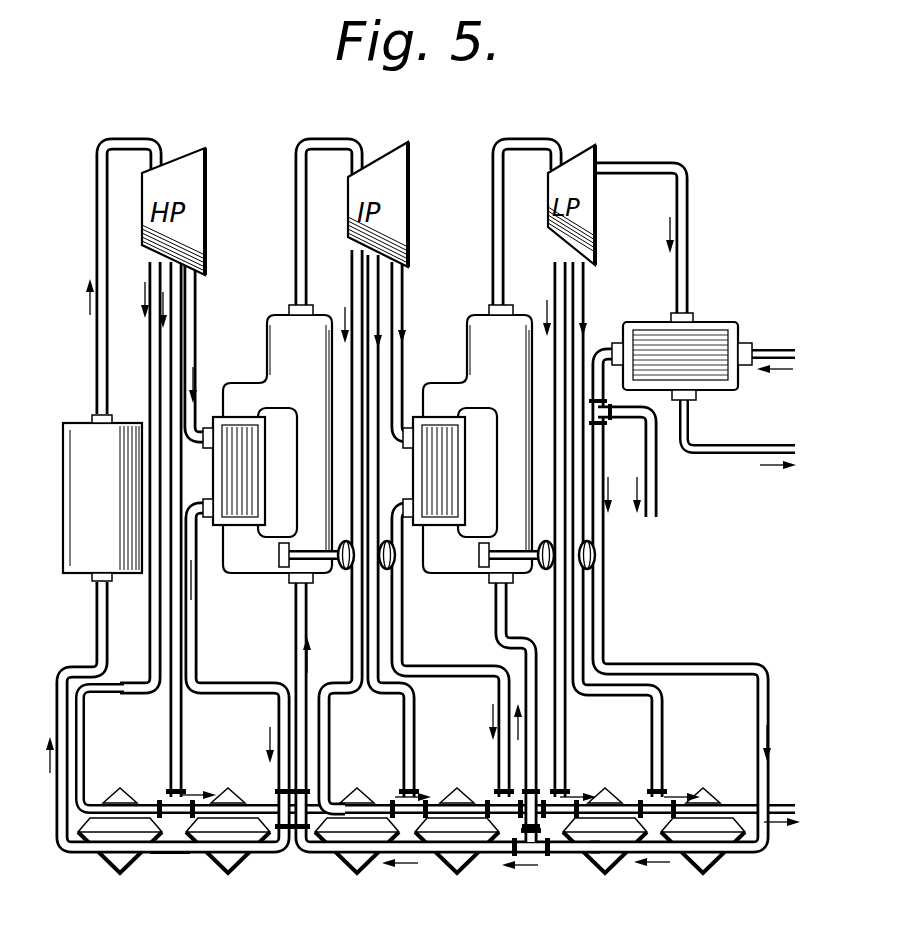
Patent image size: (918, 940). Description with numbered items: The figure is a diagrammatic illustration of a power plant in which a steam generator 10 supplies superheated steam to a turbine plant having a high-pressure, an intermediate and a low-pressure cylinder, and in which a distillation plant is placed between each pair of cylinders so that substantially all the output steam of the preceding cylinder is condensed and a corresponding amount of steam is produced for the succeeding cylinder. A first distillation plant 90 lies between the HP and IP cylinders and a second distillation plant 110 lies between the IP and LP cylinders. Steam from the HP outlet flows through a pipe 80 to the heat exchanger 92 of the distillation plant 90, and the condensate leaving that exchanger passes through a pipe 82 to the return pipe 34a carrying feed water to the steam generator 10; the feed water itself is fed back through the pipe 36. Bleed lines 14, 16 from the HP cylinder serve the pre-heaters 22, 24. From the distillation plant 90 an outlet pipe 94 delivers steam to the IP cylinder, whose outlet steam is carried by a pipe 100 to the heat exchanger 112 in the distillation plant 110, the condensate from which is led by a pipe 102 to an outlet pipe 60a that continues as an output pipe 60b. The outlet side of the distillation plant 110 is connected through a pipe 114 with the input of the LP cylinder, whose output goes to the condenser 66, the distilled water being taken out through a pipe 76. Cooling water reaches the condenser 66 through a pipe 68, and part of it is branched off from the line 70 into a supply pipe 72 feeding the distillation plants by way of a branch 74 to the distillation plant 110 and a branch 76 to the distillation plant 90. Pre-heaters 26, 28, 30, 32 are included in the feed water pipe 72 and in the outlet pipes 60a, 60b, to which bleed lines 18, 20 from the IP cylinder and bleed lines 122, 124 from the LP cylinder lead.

The steam generator 10 is at (140, 424).
The bleed line 14 is at (148, 618).
The bleed line 16 is at (168, 735).
The bleed line 18 is at (352, 616).
The bleed line 20 is at (368, 283).
The pre-heater 22 is at (108, 866).
The pre-heater 24 is at (252, 866).
The pre-heater 26 is at (348, 866).
The pre-heater 28 is at (455, 866).
The pre-heater 30 is at (600, 866).
The pre-heater 32 is at (705, 866).
The return pipe 34a is at (168, 860).
The pipe 36 is at (96, 620).
The outlet pipe 60a is at (484, 804).
The output pipe 60b is at (731, 804).
The condenser 66 is at (701, 330).
The pipe 68 is at (774, 347).
The line 70 is at (657, 490).
The supply pipe 72 is at (605, 616).
The branch 74 is at (498, 616).
The pipe 76 is at (295, 618).
The pipe 80 is at (198, 320).
The pipe 82 is at (198, 618).
The distillation plant 90 is at (245, 374).
The heat exchanger 92 is at (226, 478).
The outlet pipe 94 is at (292, 203).
The pipe 100 is at (398, 283).
The pipe 102 is at (398, 616).
The distillation plant 110 is at (453, 374).
The heat exchanger 112 is at (428, 478).
The pipe 114 is at (492, 208).
The bleed line 122 is at (555, 274).
The bleed line 124 is at (582, 272).